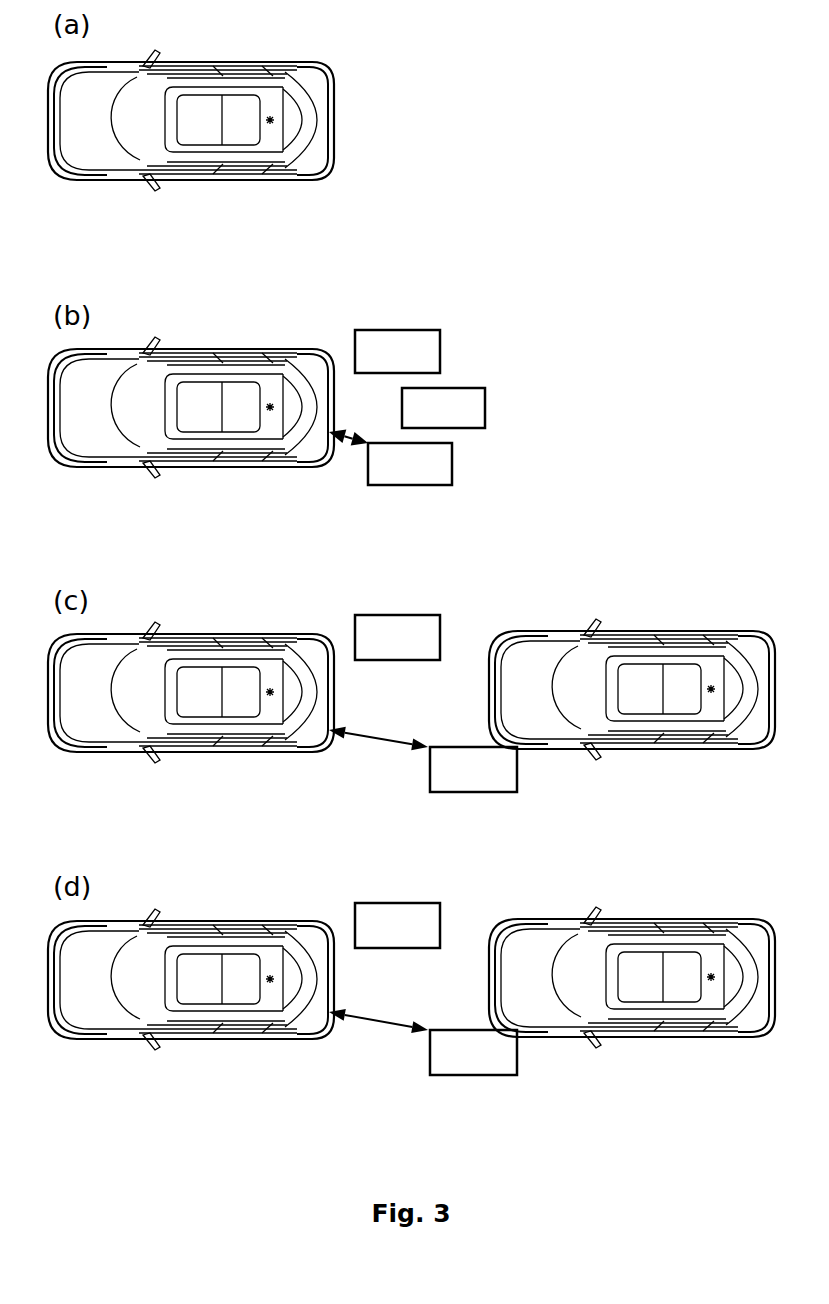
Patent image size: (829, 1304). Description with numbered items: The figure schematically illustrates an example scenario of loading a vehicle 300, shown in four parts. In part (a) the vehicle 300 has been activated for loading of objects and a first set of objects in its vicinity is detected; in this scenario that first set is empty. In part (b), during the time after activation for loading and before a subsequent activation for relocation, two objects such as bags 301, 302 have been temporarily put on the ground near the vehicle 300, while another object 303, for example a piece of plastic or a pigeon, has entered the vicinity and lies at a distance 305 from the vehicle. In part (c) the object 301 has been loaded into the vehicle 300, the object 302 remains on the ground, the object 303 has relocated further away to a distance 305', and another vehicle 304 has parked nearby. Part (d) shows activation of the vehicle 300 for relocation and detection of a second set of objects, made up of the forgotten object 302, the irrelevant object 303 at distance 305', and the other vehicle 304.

The vehicle 300 is at (137, 64).
The object 301 is at (443, 408).
The object 302 is at (397, 639).
The object 303 is at (442, 759).
The other vehicle 304 is at (577, 637).
The distance 305 is at (330, 481).
The distance 305' is at (378, 912).